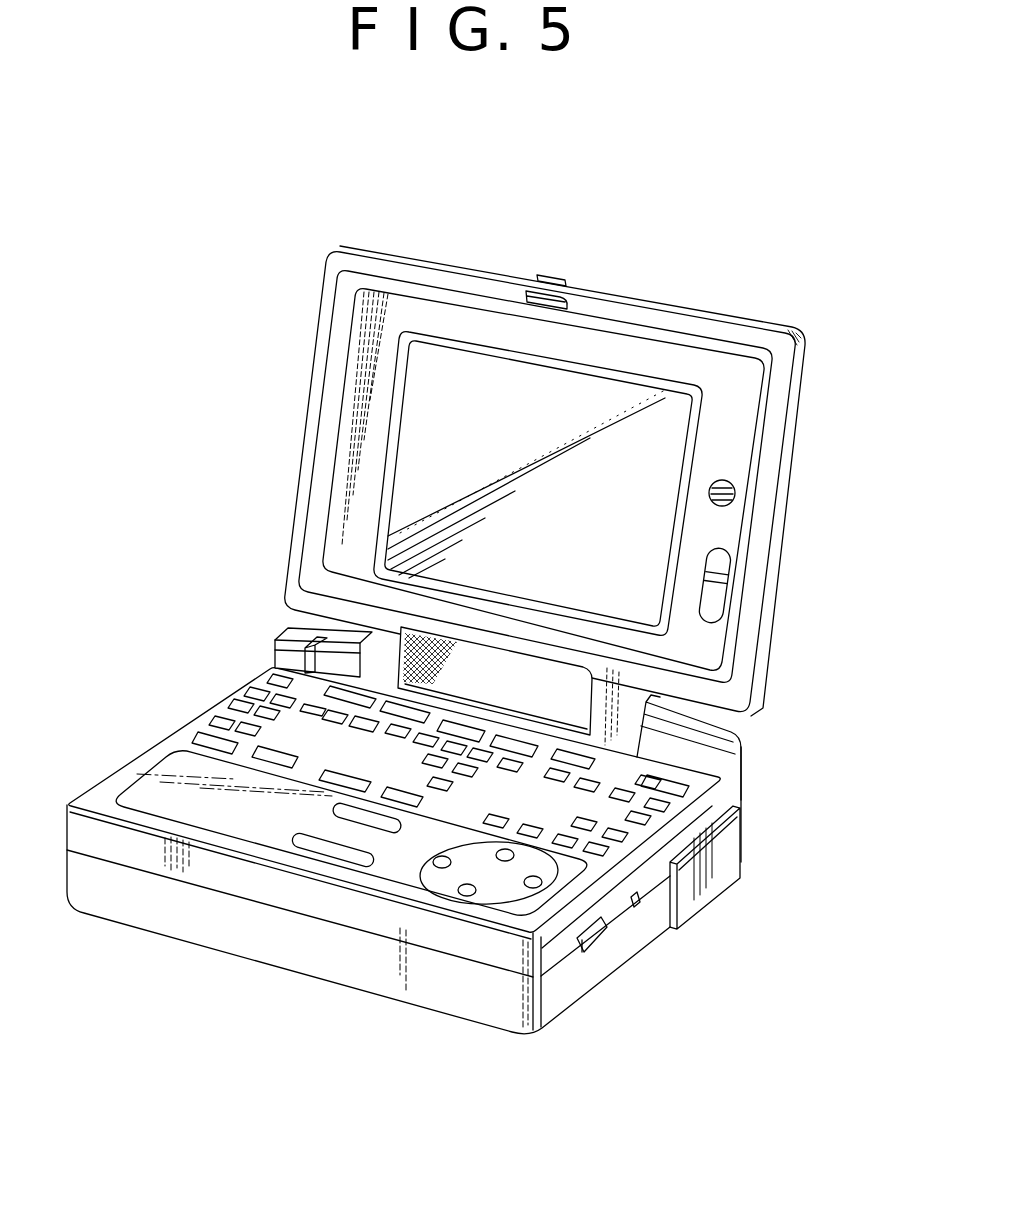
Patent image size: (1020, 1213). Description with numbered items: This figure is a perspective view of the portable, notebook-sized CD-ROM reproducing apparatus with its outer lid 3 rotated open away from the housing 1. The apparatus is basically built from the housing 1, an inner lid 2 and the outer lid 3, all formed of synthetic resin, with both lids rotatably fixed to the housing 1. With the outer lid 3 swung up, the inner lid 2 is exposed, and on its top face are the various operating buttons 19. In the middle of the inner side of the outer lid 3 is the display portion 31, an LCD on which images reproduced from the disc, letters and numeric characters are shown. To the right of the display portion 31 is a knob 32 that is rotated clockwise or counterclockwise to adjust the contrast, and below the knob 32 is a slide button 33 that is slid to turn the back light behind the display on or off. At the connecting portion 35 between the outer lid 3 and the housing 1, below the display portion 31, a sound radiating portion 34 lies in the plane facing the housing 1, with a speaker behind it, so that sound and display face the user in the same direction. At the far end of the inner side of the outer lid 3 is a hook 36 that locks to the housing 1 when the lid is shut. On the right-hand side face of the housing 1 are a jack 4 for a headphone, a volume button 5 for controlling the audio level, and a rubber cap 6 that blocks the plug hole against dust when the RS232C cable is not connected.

The housing 1 is at (145, 905).
The inner lid 2 is at (190, 735).
The outer lid 3 is at (777, 358).
The jack 4 is at (635, 905).
The volume button 5 is at (597, 942).
The rubber cap 6 is at (725, 873).
The operating buttons 19 is at (243, 655).
The display portion 31 is at (413, 420).
The knob 32 is at (724, 486).
The slide button 33 is at (716, 584).
The sound radiating portion 34 is at (575, 680).
The connecting portion 35 is at (627, 742).
The hook 36 is at (560, 280).